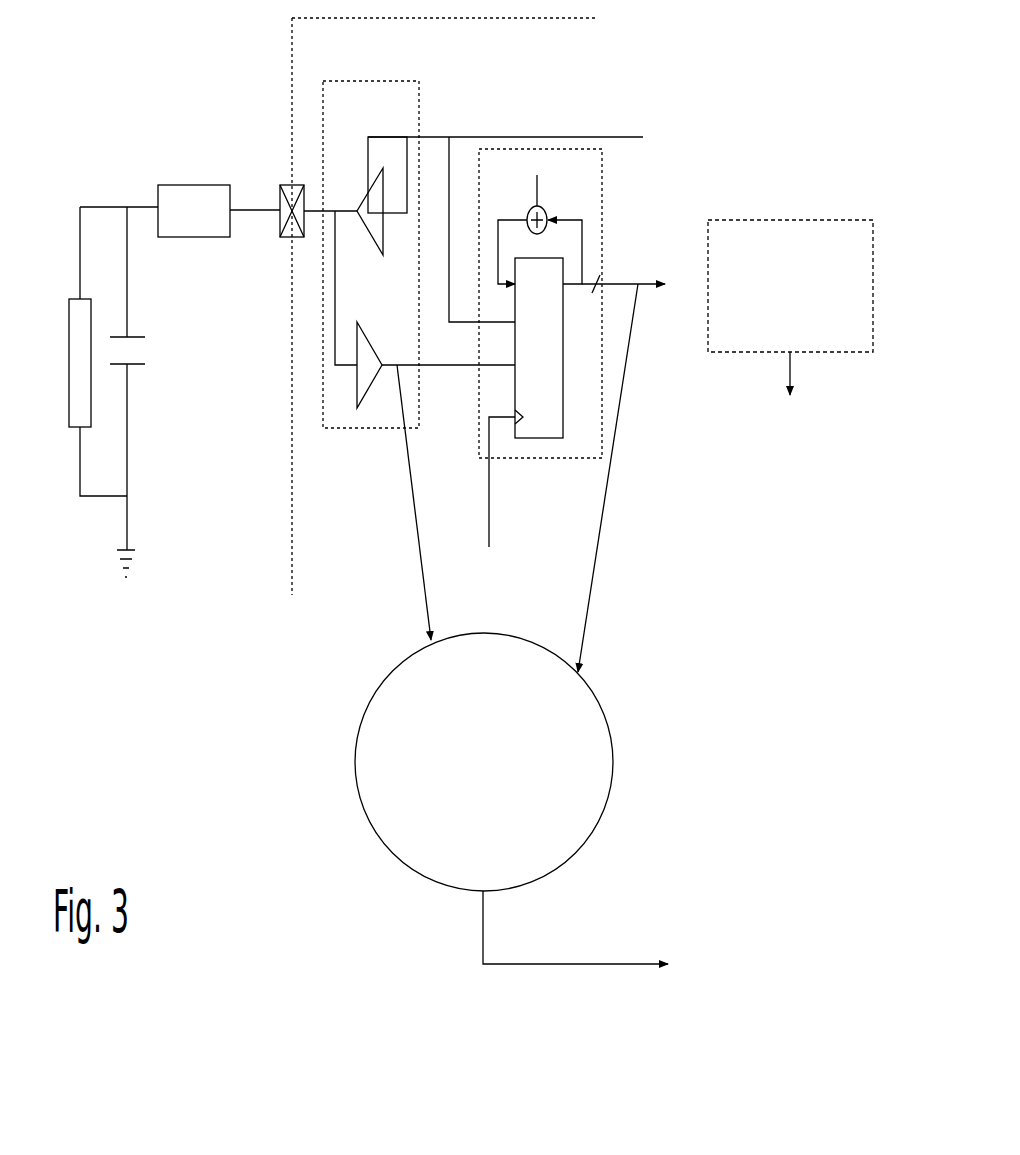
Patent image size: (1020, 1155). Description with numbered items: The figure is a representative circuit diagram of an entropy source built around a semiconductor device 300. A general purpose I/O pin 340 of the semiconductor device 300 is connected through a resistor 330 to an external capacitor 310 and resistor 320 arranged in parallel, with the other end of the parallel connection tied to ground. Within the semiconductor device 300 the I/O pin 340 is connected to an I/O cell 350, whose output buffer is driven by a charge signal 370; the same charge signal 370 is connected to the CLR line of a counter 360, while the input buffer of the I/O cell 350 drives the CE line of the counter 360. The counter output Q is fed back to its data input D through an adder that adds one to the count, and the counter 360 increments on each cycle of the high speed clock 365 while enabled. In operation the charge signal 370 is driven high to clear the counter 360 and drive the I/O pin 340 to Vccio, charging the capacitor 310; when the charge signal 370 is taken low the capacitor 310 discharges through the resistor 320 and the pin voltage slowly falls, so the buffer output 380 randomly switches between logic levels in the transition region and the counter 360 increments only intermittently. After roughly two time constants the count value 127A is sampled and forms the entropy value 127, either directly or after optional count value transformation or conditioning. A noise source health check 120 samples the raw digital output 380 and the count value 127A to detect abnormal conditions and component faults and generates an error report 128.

The semiconductor device 300 is at (296, 512).
The capacitor 310 is at (134, 335).
The resistor R2 320 is at (69, 312).
The resistor 330 is at (213, 185).
The general purpose I/O pin 340 is at (282, 240).
The I/O cell 350 is at (419, 95).
The counter 360 is at (598, 208).
The high speed clock 365 is at (490, 510).
The charge signal 370 is at (630, 132).
The buffer output 380 is at (412, 506).
The health testing 120 is at (607, 762).
The count value 127A is at (643, 287).
The entropy value 127 is at (790, 322).
The error report 128 is at (632, 962).